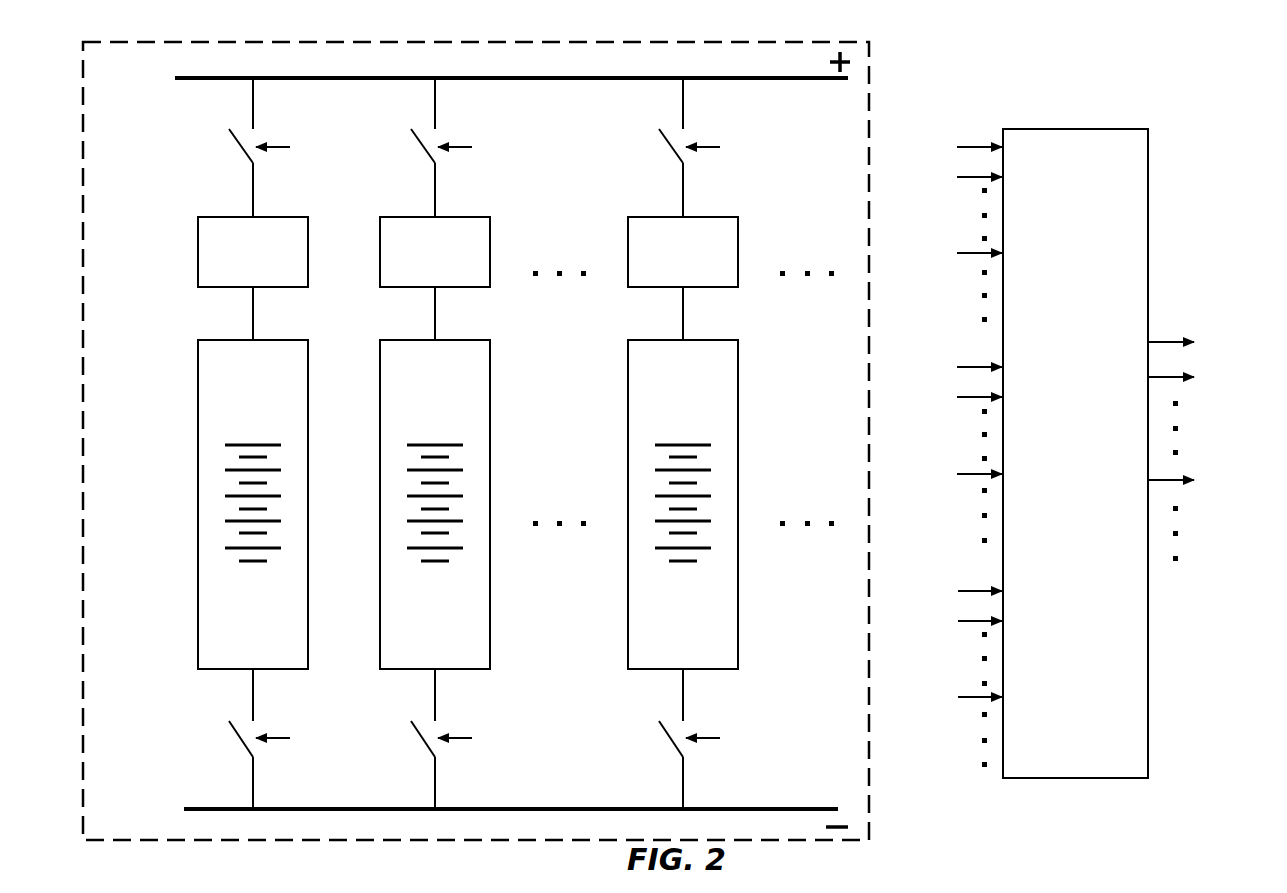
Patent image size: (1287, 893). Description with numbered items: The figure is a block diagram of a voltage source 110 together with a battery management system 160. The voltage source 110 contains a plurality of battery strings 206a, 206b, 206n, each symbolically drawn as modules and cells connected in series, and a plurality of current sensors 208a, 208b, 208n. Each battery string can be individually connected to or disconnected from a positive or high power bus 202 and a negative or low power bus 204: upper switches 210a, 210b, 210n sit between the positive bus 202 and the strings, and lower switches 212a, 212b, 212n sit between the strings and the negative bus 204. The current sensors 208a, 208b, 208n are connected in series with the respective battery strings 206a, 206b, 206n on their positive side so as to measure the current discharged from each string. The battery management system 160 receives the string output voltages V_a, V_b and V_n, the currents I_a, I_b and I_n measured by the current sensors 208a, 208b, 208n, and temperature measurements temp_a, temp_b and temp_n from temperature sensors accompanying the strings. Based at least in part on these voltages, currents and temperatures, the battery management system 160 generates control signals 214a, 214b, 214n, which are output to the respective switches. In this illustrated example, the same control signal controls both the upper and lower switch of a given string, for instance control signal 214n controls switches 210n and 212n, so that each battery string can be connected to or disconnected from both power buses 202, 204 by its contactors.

The voltage source 110 is at (870, 107).
The battery management system 160 is at (1150, 143).
The positive or high power bus 202 is at (193, 82).
The negative or low power bus 204 is at (200, 811).
The battery string 206a is at (308, 400).
The battery string 206b is at (490, 400).
The battery string 206n is at (738, 400).
The current sensor 208a is at (308, 248).
The current sensor 208b is at (490, 248).
The current sensor 208n is at (738, 248).
The switch 210a is at (223, 153).
The switch 210b is at (405, 153).
The switch 210n is at (653, 153).
The switch 212a is at (223, 745).
The switch 212b is at (405, 745).
The switch 212n is at (653, 745).
The control signal 214a is at (757, 443).
The control signal 214b is at (848, 443).
The control signal 214n is at (972, 443).